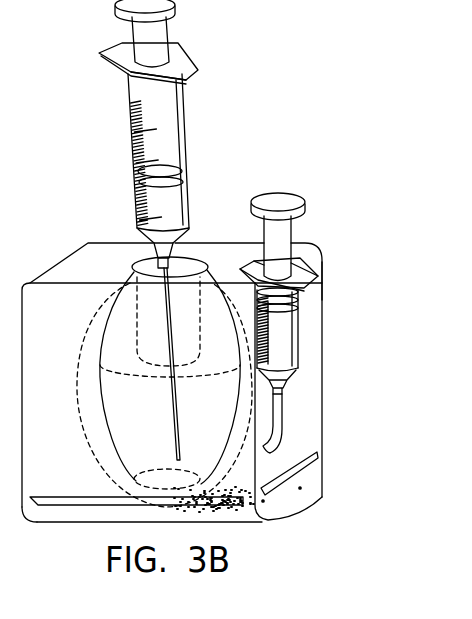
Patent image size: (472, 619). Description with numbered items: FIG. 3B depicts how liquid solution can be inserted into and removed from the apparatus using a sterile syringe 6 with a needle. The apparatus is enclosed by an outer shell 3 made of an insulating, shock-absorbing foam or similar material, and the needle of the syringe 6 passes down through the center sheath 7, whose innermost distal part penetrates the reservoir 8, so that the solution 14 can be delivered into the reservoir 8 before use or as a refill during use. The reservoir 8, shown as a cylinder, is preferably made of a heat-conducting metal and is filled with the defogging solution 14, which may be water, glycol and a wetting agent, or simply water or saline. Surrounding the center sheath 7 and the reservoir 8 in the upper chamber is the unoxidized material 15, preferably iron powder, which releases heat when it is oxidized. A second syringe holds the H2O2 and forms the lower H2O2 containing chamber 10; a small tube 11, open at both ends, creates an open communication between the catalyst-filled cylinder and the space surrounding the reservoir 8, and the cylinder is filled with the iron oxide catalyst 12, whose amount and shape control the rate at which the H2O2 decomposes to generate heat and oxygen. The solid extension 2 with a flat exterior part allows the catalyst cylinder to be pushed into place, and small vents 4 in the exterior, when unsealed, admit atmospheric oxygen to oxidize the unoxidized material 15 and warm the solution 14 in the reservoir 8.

The solid extension 2 is at (273, 203).
The outer shell 3 is at (313, 379).
The vents 4 is at (68, 498).
The syringe 6 is at (128, 85).
The center sheath 7 is at (136, 310).
The reservoir 8 is at (93, 329).
The H2O2 containing chamber 10 is at (325, 296).
The small tube 11 is at (283, 412).
The iron oxide catalyst 12 is at (232, 519).
The solution 14 is at (127, 452).
The unoxidized material 15 is at (73, 383).
The hydrogen peroxide H2O2 is at (292, 343).